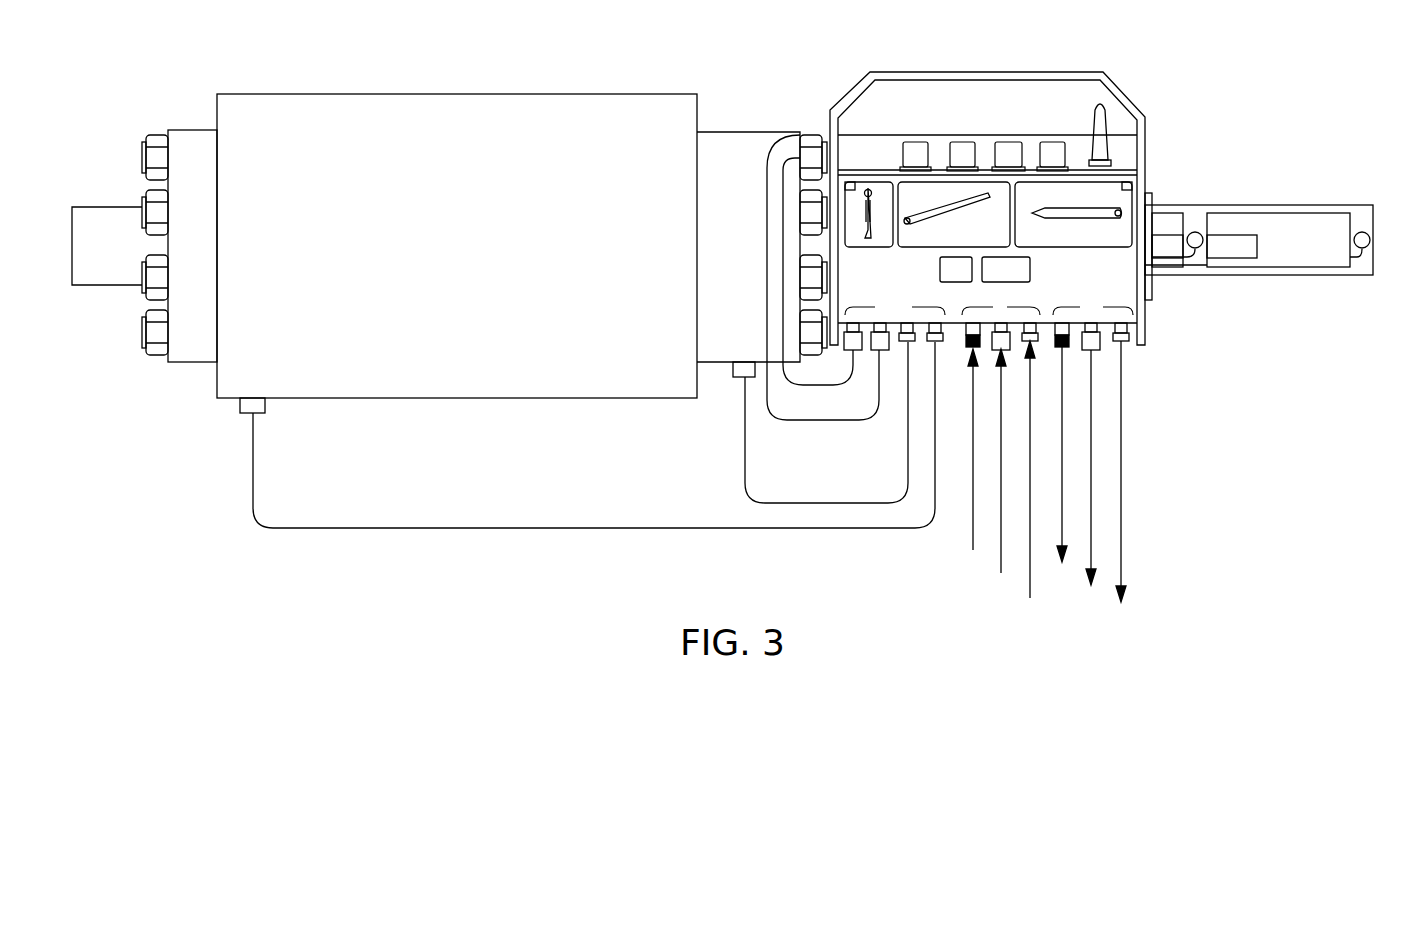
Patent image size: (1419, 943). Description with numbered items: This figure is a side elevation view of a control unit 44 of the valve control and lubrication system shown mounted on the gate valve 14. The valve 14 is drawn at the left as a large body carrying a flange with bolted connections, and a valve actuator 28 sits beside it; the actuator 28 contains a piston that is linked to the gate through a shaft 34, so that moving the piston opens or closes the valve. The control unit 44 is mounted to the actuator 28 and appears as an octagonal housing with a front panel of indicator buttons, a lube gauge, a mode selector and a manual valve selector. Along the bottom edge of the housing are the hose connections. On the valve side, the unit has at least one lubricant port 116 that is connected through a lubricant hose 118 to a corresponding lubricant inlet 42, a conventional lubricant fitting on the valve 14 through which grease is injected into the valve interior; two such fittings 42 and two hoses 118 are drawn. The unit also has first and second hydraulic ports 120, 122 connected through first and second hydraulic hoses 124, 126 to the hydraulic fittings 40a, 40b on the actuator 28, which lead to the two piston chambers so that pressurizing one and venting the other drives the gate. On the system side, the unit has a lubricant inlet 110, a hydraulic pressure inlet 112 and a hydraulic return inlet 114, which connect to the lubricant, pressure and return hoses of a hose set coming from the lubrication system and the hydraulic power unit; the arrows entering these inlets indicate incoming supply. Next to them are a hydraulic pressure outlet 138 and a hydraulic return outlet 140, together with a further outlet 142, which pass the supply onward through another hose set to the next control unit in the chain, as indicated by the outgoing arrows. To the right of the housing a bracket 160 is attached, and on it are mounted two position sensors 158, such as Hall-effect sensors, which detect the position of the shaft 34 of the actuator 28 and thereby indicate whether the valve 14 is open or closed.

The gate valve 14 is at (387, 94).
The control unit 44 is at (937, 307).
The hydraulic fitting 40a is at (1127, 182).
The hydraulic fitting 40b is at (850, 182).
The valve actuator 28 is at (1153, 200).
The position sensor 158 is at (1195, 232).
The shaft 34 is at (1245, 235).
The bracket 160 is at (1237, 277).
The lubricant port 116 is at (935, 322).
The first hydraulic port 120 is at (880, 322).
The second hydraulic port 122 is at (853, 322).
The lubricant inlet 42 is at (266, 406).
The lubricant hose 118 is at (456, 528).
The first hydraulic hose 124 is at (838, 422).
The second hydraulic hose 126 is at (810, 386).
The hydraulic pressure outlet 138 is at (1125, 341).
The hydraulic return outlet 140 is at (1093, 350).
The tank out line 142 is at (1065, 350).
The lubricant inlet 110 is at (1032, 350).
The hydraulic pressure inlet 112 is at (1003, 360).
The hydraulic return inlet 114 is at (975, 360).